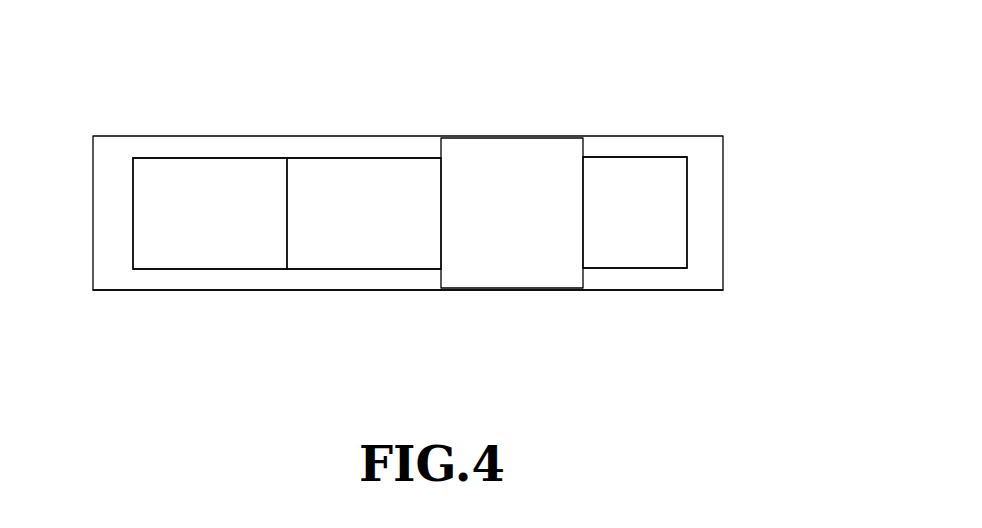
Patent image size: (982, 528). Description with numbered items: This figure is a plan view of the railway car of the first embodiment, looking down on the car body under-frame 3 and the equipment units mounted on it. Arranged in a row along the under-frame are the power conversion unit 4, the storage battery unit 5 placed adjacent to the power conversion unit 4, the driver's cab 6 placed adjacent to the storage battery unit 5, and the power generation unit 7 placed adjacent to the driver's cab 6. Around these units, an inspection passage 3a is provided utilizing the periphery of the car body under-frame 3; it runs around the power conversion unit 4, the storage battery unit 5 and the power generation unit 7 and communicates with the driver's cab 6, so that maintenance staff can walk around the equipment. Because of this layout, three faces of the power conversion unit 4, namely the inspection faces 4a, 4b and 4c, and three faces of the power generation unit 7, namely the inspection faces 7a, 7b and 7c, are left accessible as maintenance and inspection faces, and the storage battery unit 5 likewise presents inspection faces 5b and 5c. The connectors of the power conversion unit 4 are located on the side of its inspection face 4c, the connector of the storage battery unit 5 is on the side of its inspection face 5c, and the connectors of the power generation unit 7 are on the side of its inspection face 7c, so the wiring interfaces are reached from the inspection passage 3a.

The car body under-frame 3 is at (425, 290).
The inspection passage 3a is at (247, 291).
The power conversion unit 4 is at (183, 85).
The inspection face 4a is at (133, 175).
The inspection face 4b is at (177, 158).
The inspection face 4c is at (160, 269).
The storage battery unit 5 is at (334, 100).
The inspection face 5b is at (349, 158).
The inspection face 5c is at (380, 269).
The driver's cab 6 is at (455, 138).
The power generation unit 7 is at (609, 95).
The inspection face 7a is at (687, 253).
The inspection face 7b is at (645, 157).
The inspection face 7c is at (645, 268).